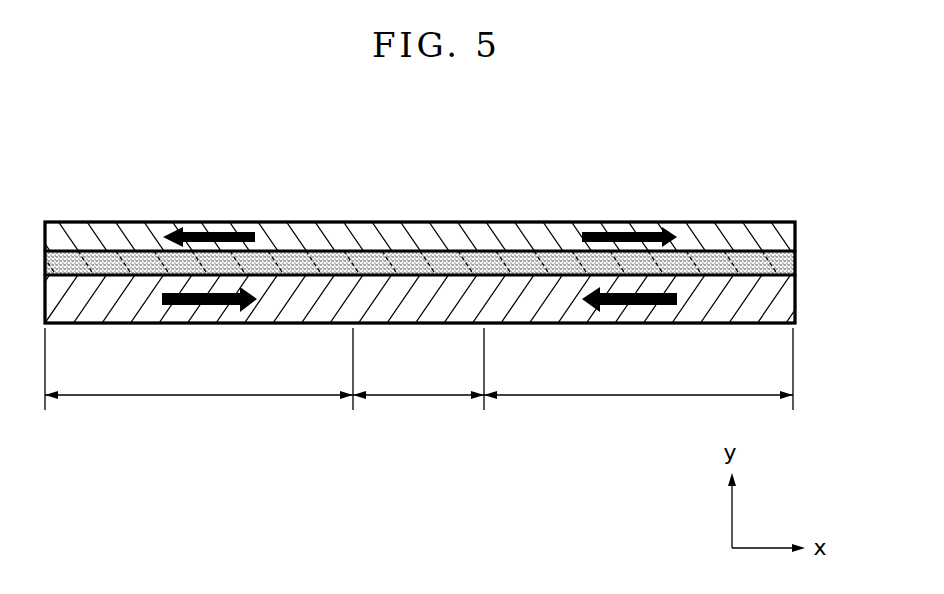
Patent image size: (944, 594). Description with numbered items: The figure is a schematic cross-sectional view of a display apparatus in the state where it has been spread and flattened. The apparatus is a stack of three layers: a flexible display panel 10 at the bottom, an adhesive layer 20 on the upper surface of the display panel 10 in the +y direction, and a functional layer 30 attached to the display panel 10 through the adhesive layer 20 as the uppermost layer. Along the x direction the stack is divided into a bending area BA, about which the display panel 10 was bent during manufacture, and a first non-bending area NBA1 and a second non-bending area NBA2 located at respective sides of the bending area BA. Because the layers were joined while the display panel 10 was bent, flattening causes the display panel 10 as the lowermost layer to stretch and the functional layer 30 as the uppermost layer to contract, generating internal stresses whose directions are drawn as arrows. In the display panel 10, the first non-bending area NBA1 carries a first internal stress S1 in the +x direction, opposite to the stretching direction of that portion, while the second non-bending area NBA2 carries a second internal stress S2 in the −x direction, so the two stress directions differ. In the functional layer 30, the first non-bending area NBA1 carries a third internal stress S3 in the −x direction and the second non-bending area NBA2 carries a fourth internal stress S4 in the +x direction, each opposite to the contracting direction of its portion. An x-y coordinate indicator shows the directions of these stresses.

The display panel 10 is at (783, 298).
The adhesive layer 20 is at (794, 262).
The functional layer 30 is at (788, 237).
The first internal stress S1 is at (211, 323).
The second internal stress S2 is at (645, 323).
The third internal stress S3 is at (210, 222).
The fourth internal stress S4 is at (625, 222).
The first non-bending area NBA1 is at (199, 409).
The bending area BA is at (418, 409).
The second non-bending area NBA2 is at (638, 409).